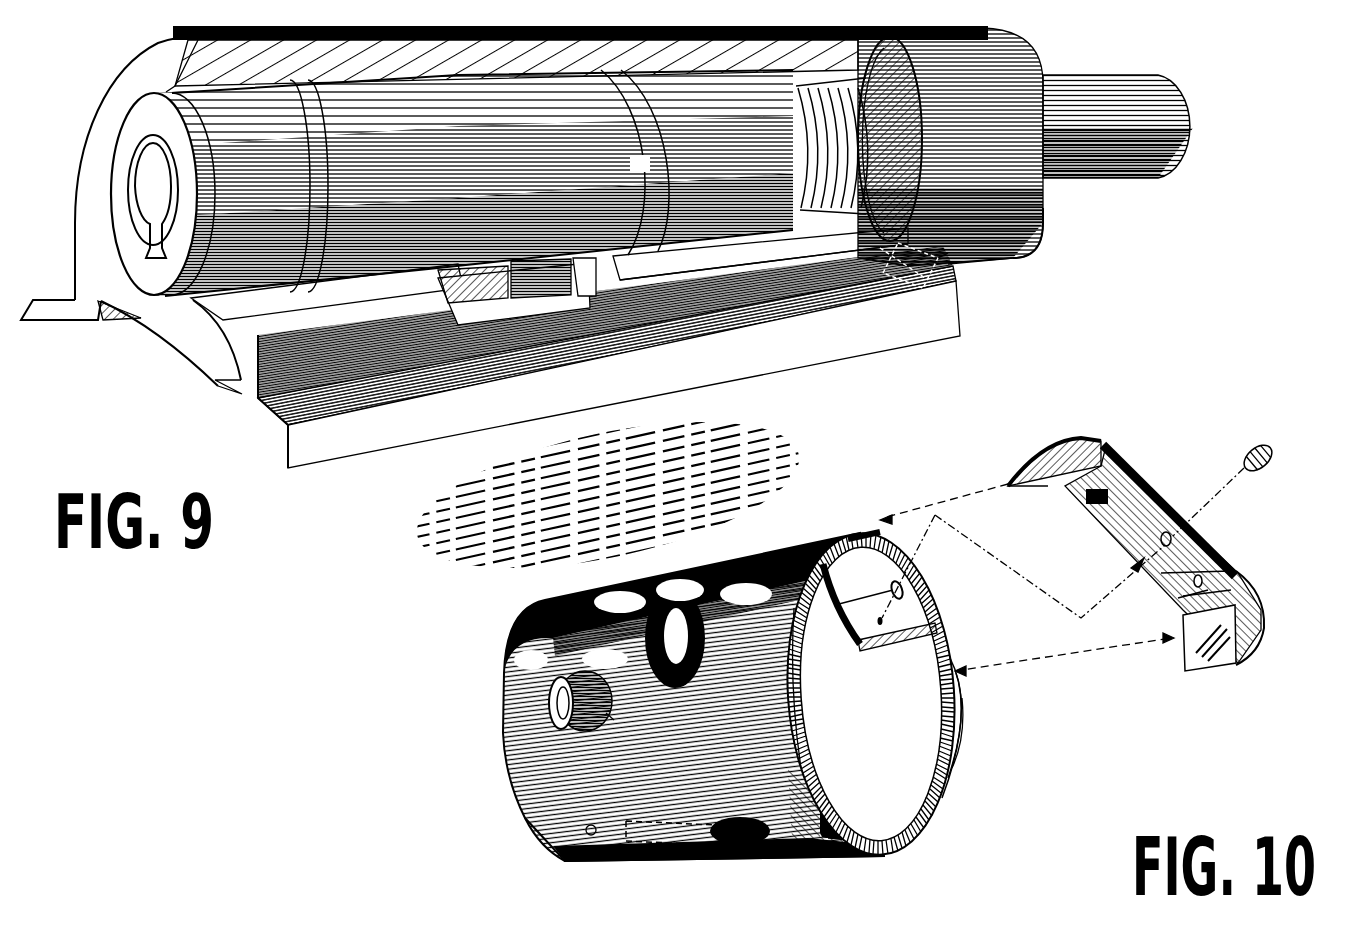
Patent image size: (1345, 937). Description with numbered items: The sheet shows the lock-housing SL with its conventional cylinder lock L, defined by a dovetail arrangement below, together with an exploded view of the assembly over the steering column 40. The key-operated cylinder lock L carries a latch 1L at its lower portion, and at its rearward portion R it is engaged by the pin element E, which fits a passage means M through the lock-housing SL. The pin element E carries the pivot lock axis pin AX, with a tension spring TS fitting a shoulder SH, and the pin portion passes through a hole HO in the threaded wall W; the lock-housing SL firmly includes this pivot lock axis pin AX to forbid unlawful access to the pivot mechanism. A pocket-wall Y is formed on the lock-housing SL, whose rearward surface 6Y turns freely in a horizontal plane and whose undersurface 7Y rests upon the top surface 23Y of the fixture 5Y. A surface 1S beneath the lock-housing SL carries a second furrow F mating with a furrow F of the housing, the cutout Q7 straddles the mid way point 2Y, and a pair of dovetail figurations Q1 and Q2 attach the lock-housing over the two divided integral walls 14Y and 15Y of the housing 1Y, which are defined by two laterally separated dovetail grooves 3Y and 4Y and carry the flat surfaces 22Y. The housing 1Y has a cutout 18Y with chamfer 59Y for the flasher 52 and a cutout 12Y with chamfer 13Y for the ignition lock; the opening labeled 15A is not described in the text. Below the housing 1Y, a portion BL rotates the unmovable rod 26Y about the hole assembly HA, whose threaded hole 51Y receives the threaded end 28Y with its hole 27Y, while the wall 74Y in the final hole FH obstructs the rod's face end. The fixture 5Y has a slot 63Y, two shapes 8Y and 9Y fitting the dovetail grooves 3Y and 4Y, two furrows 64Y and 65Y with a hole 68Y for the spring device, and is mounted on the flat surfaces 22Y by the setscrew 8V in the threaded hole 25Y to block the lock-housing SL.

In FIG. 9, the cylinder lock L is at (123, 117).
In FIG. 9, the passage means M is at (168, 79).
In FIG. 9, the rearward portion R is at (479, 181).
In FIG. 9, the shoulder SH is at (803, 38).
In FIG. 9, the pivot lock axis pin AX is at (1170, 152).
In FIG. 9, the hole HO is at (963, 111).
In FIG. 9, the lock-housing SL is at (1002, 42).
In FIG. 9, the rearward surface 6Y is at (1036, 208).
In FIG. 9, the undersurface 7Y is at (985, 250).
In FIG. 9, the pocket-wall Y is at (945, 265).
In FIG. 9, the threaded wall W is at (951, 243).
In FIG. 9, the pin element E is at (783, 216).
In FIG. 9, the tension spring TS is at (833, 205).
In FIG. 9, the surface 1S is at (377, 283).
In FIG. 9, the latch 1L is at (491, 288).
In FIG. 9, the furrow F is at (517, 295).
In FIG. 9, the dovetail figuration Q2 is at (53, 303).
In FIG. 9, the cutout Q7 is at (150, 313).
In FIG. 9, the dovetail figuration Q1 is at (233, 387).
In FIG. 10, the housing 1Y is at (522, 618).
In FIG. 10, the chamfer 13Y is at (684, 600).
In FIG. 10, the cutout 12Y is at (746, 594).
In FIG. 10, the opening 15A is at (675, 633).
In FIG. 10, the flasher 52 is at (545, 680).
In FIG. 10, the chamfer 59Y is at (570, 675).
In FIG. 10, the cutout 18Y is at (605, 700).
In FIG. 10, the integral wall 15Y is at (933, 800).
In FIG. 10, the portion below the housing BL is at (512, 810).
In FIG. 10, the unmovable rod 26Y is at (710, 808).
In FIG. 10, the final hole FH is at (588, 813).
In FIG. 10, the wall 74Y is at (582, 818).
In FIG. 10, the hole 27Y is at (800, 847).
In FIG. 10, the threaded end 28Y is at (837, 832).
In FIG. 10, the hole assembly HA is at (833, 807).
In FIG. 10, the threaded hole 51Y is at (818, 765).
In FIG. 10, the integral wall 14Y is at (802, 533).
In FIG. 10, the dovetail groove 3Y is at (858, 521).
In FIG. 10, the steering column 40 is at (788, 625).
In FIG. 10, the flat surface 22Y is at (940, 620).
In FIG. 10, the mid way point 2Y is at (905, 571).
In FIG. 10, the threaded hole 25Y is at (1157, 537).
In FIG. 10, the dovetail groove 4Y is at (958, 663).
In FIG. 10, the shape 8Y is at (1038, 450).
In FIG. 10, the fixture 5Y is at (1127, 528).
In FIG. 10, the top surface 23Y is at (1112, 438).
In FIG. 10, the furrow 64Y is at (1235, 570).
In FIG. 10, the slot 63Y is at (1080, 497).
In FIG. 10, the hole 68Y is at (1180, 593).
In FIG. 10, the furrow 65Y is at (1185, 585).
In FIG. 10, the shape 9Y is at (1177, 658).
In FIG. 10, the setscrew 8V is at (1267, 433).